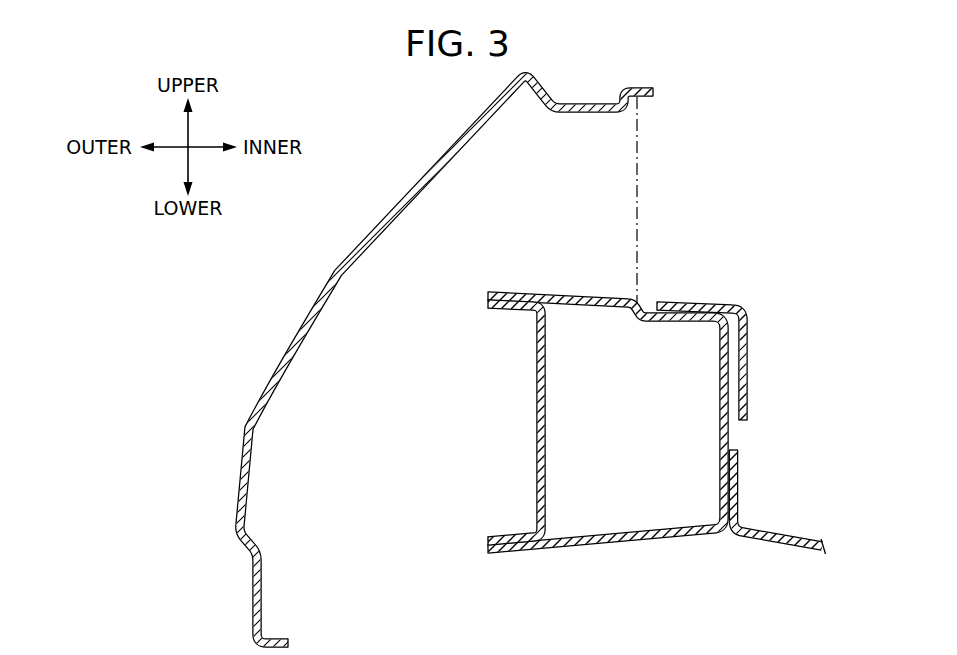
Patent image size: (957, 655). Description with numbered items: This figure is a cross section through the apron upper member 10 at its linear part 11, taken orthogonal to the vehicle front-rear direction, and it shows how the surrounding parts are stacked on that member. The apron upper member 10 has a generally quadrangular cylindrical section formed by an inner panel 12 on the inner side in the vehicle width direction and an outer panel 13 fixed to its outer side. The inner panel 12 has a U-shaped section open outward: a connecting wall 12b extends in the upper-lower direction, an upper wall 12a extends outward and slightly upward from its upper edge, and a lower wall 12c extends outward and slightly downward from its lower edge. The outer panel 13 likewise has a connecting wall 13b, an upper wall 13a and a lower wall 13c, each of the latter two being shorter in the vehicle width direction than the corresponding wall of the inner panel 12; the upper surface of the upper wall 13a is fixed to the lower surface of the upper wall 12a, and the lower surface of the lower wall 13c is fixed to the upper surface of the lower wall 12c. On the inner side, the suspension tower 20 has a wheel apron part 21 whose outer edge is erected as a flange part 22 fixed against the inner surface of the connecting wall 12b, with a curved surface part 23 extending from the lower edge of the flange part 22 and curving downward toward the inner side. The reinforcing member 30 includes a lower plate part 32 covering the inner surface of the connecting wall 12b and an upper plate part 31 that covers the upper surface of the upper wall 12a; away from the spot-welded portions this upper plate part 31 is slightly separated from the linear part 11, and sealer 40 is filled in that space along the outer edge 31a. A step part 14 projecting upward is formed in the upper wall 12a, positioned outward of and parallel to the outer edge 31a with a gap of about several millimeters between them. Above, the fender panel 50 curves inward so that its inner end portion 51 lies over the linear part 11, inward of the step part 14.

The apron upper member 10 is at (521, 235).
The linear part 11 is at (645, 404).
The inner panel 12 is at (640, 414).
The upper wall 12a is at (587, 296).
The connecting wall 12b is at (730, 438).
The lower wall 12c is at (597, 548).
The outer panel 13 is at (503, 423).
The upper wall 13a is at (499, 308).
The connecting wall 13b is at (537, 402).
The lower wall 13c is at (505, 536).
The step part 14 is at (641, 303).
The suspension tower 20 is at (749, 537).
The wheel apron part 21 is at (749, 537).
The flange part 22 is at (729, 478).
The curved surface part 23 is at (785, 546).
The reinforcing member 30 is at (725, 335).
The upper plate part 31 is at (700, 302).
The outer edge 31a is at (656, 302).
The lower plate part 32 is at (748, 411).
The sealer 40 is at (652, 321).
The fender panel 50 is at (473, 362).
The inner end portion 51 is at (655, 93).